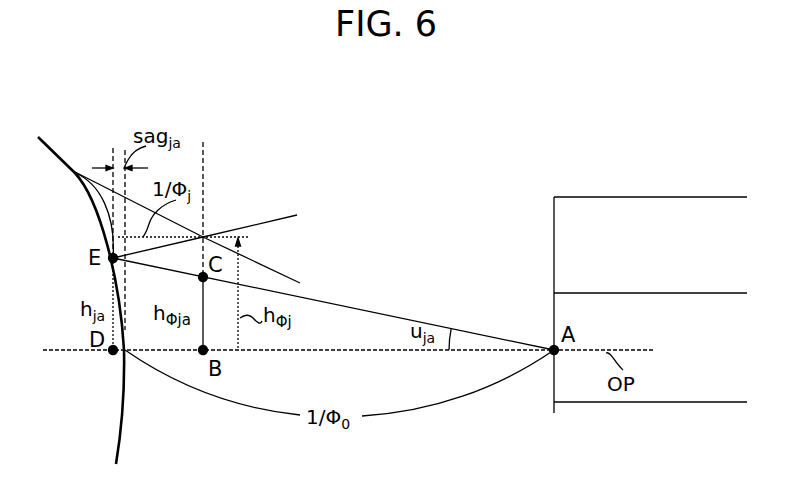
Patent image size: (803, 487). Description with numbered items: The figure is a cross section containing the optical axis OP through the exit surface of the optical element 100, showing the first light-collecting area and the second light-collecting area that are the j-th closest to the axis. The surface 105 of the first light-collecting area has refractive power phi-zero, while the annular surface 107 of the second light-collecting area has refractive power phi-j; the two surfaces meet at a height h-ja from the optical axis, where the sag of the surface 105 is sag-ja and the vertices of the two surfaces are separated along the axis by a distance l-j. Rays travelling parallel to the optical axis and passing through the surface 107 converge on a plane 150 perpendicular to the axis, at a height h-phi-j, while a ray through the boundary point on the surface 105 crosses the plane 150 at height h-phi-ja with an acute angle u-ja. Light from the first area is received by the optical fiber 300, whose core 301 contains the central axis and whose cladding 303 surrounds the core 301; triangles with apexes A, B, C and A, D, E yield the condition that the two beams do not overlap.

The optical element 100 is at (113, 266).
The surface of the first light-collecting area 105 is at (71, 166).
The surface of the second light-collecting area 107 is at (88, 176).
The plane 150 is at (205, 172).
The optical fiber 300 is at (650, 264).
The cladding 303 is at (614, 218).
The core 301 is at (665, 332).